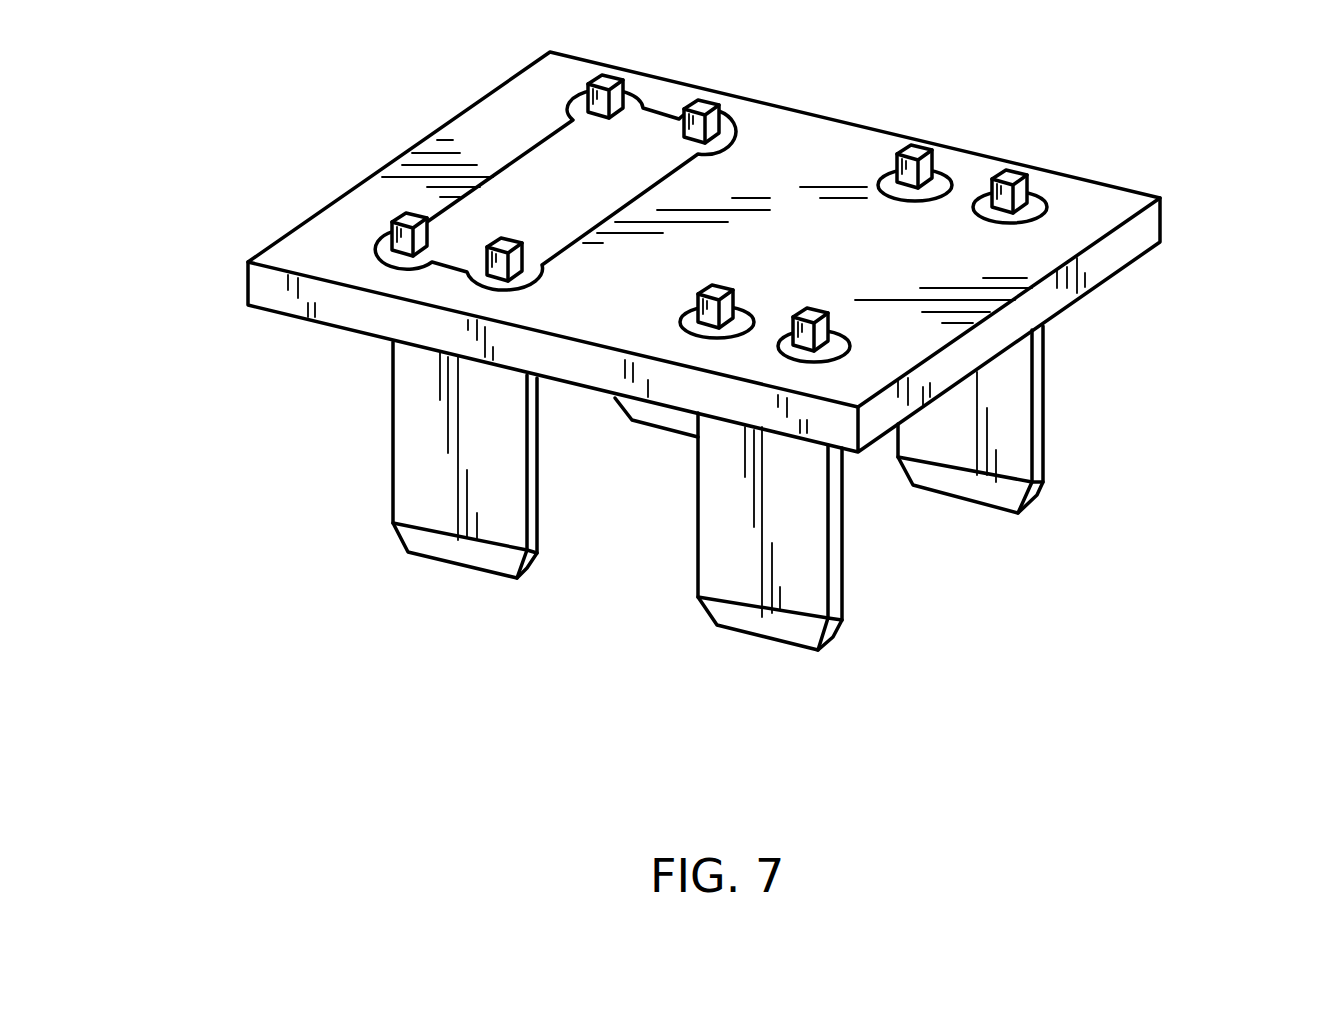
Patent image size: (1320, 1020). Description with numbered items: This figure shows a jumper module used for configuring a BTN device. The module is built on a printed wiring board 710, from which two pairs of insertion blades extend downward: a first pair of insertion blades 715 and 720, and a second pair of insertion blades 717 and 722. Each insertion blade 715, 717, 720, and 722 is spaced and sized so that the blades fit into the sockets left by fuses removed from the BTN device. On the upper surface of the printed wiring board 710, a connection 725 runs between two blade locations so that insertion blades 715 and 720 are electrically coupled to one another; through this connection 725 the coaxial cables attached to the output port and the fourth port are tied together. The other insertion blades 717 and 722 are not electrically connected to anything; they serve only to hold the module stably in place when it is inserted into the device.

The printed wiring board 710 is at (1093, 270).
The insertion blade 715 is at (690, 438).
The insertion blade 717 is at (823, 645).
The insertion blade 720 is at (410, 450).
The insertion blade 722 is at (1040, 482).
The connection 725 is at (527, 172).